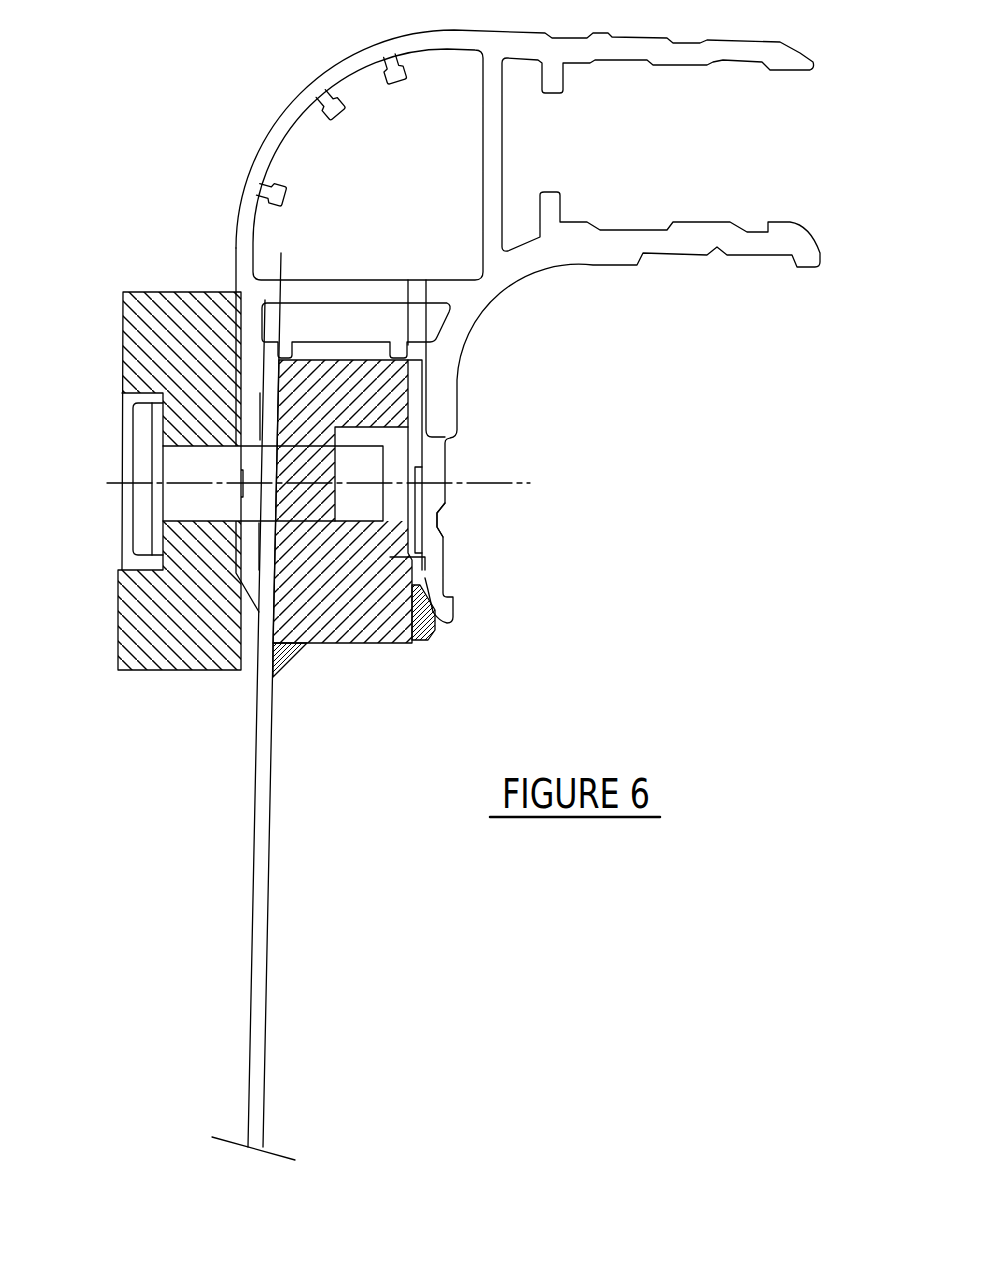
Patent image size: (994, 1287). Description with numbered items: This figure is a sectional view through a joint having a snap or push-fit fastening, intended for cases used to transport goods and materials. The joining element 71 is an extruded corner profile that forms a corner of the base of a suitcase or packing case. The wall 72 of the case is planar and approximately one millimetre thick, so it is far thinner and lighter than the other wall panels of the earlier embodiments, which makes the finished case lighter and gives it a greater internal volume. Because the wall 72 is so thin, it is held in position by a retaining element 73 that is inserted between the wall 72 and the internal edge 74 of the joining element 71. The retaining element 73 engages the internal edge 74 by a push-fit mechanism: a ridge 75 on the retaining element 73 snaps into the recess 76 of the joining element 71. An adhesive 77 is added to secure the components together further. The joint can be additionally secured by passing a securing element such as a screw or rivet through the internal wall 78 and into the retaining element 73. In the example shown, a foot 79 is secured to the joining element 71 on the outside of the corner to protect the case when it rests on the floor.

The joining element 71 is at (182, 178).
The wall 72 is at (240, 917).
The retaining element 73 is at (330, 540).
The internal edge 74 is at (423, 428).
The ridge 75 is at (430, 567).
The recess 76 is at (430, 543).
The adhesive 77 is at (430, 633).
The internal wall 78 is at (450, 430).
The foot 79 is at (140, 292).